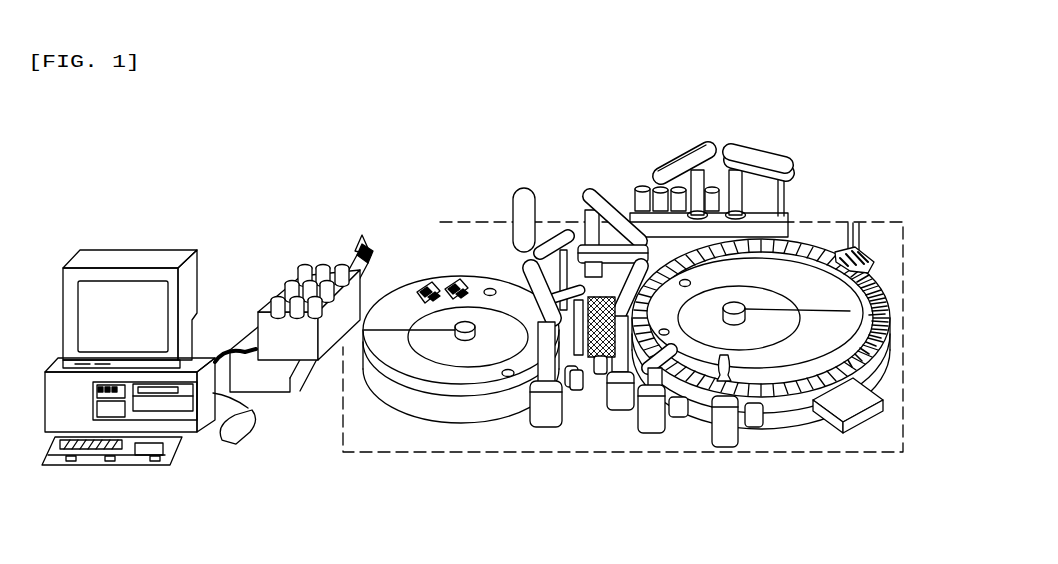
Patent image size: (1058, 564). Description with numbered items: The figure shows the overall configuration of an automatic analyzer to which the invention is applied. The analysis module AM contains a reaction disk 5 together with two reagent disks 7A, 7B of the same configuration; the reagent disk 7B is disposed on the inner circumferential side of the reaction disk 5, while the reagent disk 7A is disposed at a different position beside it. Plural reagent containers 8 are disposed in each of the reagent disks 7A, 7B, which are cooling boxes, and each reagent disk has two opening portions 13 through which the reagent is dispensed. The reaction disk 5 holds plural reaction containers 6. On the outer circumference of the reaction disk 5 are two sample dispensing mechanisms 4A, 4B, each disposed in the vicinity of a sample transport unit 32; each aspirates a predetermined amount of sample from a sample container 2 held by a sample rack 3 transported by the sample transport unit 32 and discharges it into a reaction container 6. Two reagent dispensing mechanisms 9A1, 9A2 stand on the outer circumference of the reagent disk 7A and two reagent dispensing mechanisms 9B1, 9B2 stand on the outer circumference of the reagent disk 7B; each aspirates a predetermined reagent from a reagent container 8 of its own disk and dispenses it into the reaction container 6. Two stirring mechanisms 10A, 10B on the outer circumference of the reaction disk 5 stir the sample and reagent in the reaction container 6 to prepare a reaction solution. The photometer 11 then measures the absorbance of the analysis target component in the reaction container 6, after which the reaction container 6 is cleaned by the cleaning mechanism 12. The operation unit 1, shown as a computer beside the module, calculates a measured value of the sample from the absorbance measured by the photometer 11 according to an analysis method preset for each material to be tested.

The operation unit 1 is at (125, 468).
The sample container 2 is at (302, 262).
The sample rack 3 is at (300, 342).
The sample transport unit 32 is at (352, 246).
The sample dispensing mechanism 4A is at (683, 160).
The sample dispensing mechanism 4B is at (760, 150).
The reaction disk 5 is at (878, 358).
The reaction container 6 is at (888, 342).
The reagent disk 7A is at (406, 300).
The reagent disk 7B is at (852, 320).
The reagent container 8 is at (443, 284).
The reagent dispensing mechanism 9A1 is at (551, 287).
The reagent dispensing mechanism 9B1 is at (566, 262).
The reagent dispensing mechanism 9A2 is at (587, 343).
The reagent dispensing mechanism 9B2 is at (630, 366).
The stirring mechanism 10A is at (710, 444).
The stirring mechanism 10B is at (657, 430).
The photometer 11 is at (857, 422).
The cleaning mechanism 12 is at (877, 258).
The opening portion 13 is at (489, 289).
The analysis module AM is at (614, 380).